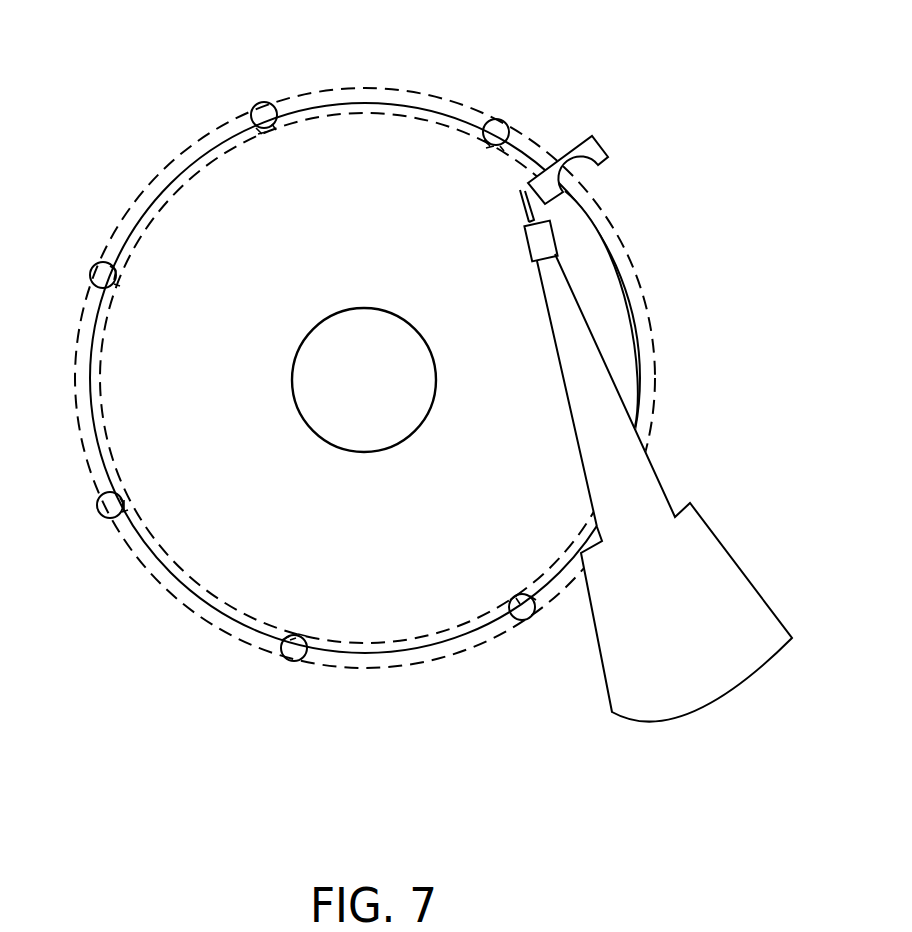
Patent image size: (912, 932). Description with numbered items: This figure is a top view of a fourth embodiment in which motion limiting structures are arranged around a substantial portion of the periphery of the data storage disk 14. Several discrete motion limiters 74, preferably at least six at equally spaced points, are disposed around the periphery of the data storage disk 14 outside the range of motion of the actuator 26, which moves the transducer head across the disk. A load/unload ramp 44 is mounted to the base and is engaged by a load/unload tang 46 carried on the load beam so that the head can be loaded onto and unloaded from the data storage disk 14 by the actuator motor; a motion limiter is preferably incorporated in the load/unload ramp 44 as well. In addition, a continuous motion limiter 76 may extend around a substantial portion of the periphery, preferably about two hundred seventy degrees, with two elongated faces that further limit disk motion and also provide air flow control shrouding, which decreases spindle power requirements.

The data storage disk 14 is at (207, 517).
The actuator 26 is at (702, 481).
The load/unload ramp 44 is at (604, 137).
The load/unload tang 46 is at (535, 216).
The motion limiters 74 is at (262, 104).
The continuous motion limiter 76 is at (408, 668).